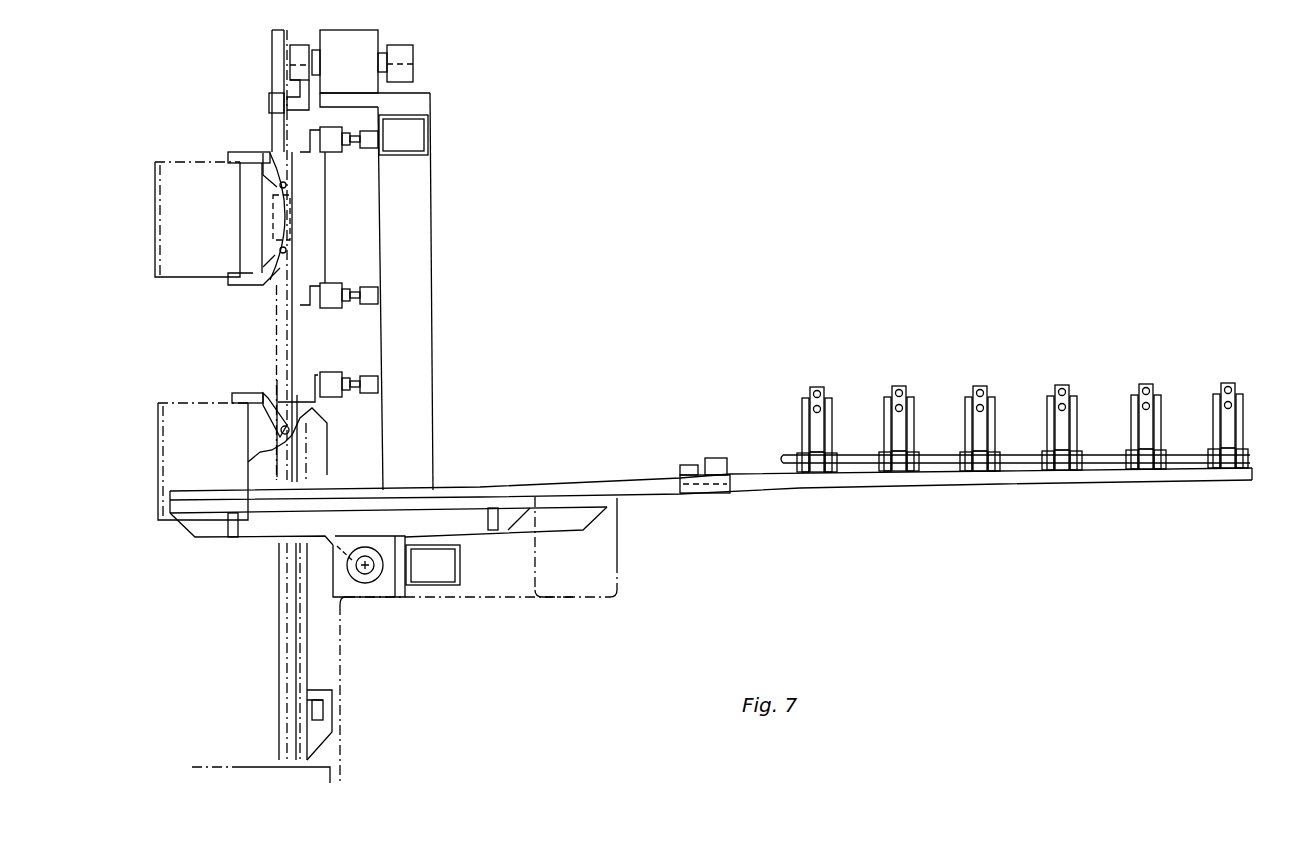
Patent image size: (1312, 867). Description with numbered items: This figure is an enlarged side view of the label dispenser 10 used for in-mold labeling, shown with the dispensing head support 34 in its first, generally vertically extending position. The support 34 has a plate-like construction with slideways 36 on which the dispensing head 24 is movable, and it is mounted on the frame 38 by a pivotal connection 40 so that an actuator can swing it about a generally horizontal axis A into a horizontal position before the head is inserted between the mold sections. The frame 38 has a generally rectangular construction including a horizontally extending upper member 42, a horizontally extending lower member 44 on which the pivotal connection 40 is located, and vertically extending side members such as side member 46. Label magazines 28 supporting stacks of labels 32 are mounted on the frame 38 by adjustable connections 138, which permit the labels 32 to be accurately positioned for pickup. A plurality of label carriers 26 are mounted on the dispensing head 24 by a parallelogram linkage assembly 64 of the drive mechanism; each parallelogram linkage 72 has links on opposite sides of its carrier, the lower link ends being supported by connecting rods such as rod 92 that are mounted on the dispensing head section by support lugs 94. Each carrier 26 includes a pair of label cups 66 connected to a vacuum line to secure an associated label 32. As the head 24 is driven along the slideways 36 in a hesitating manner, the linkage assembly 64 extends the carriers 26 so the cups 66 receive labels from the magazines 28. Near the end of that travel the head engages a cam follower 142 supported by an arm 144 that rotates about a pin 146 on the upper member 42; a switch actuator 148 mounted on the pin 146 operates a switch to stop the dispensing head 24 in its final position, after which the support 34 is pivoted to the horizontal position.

The apparatus 10 is at (426, 291).
The dispensing head 24 is at (266, 38).
The label carriers 26 is at (821, 387).
The label magazine 28 is at (252, 157).
The labels 32 is at (178, 162).
The dispensing head support 34 is at (562, 484).
The slideways 36 is at (502, 487).
The frame 38 is at (435, 350).
The pivotal connection 40 is at (376, 591).
The upper member 42 is at (430, 124).
The lower member 44 is at (458, 568).
The side member 46 is at (435, 399).
The parallelogram linkage assembly 64 is at (1029, 405).
The label cups 66 is at (906, 404).
The parallelogram linkage 72 is at (887, 441).
The connecting rod 92 is at (943, 464).
The support lugs 94 is at (817, 468).
The adjustable connections 138 is at (353, 283).
The cam follower 142 is at (270, 105).
The arm 144 is at (296, 82).
The pin 146 is at (309, 63).
The switch actuator 148 is at (414, 77).
The horizontal axis A is at (364, 567).